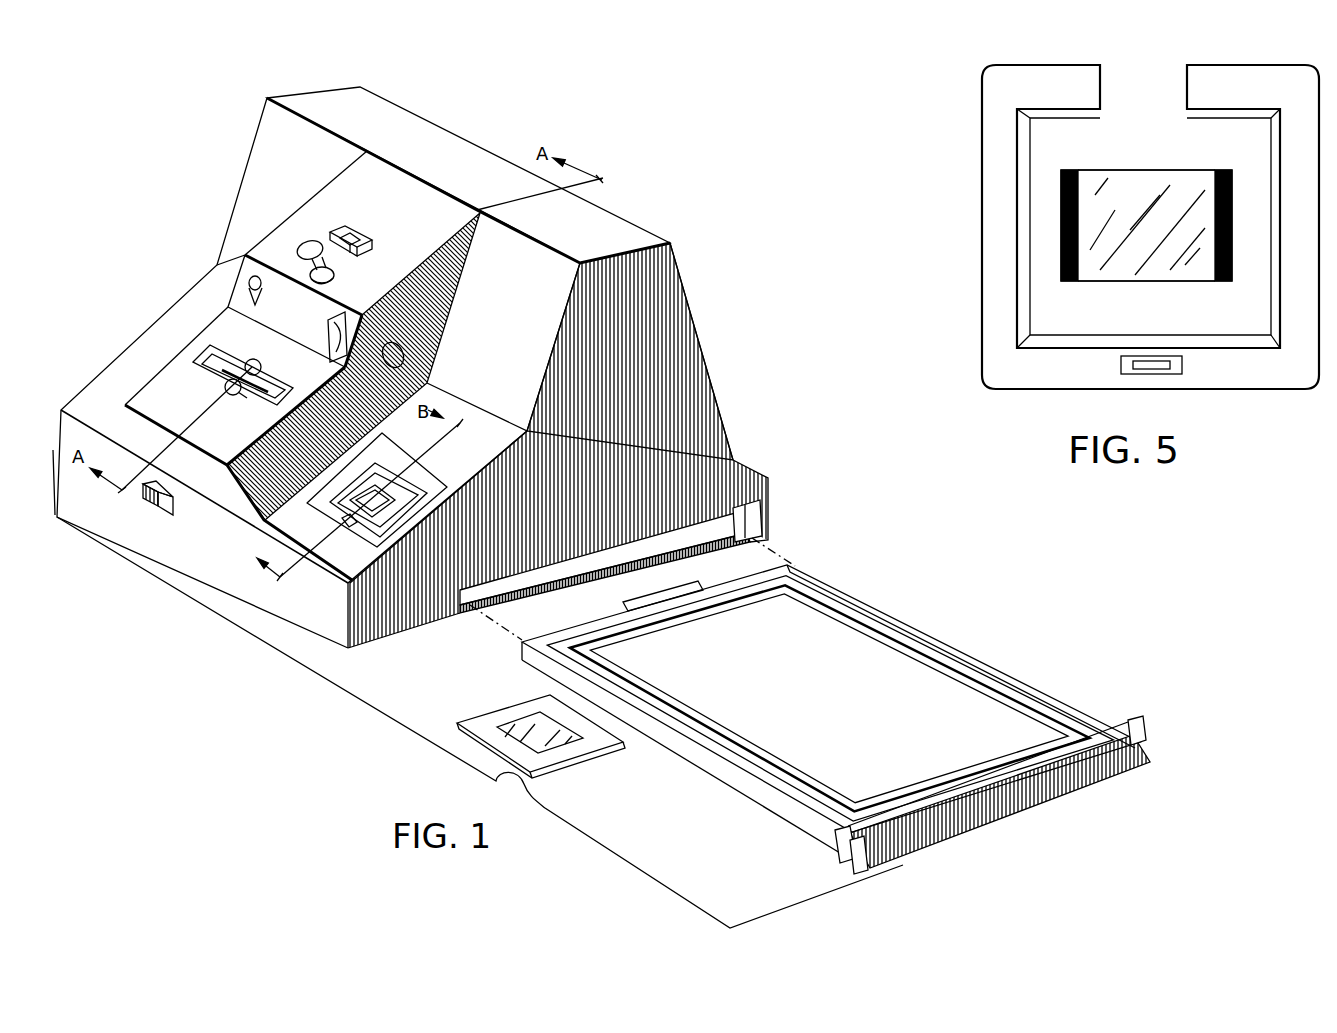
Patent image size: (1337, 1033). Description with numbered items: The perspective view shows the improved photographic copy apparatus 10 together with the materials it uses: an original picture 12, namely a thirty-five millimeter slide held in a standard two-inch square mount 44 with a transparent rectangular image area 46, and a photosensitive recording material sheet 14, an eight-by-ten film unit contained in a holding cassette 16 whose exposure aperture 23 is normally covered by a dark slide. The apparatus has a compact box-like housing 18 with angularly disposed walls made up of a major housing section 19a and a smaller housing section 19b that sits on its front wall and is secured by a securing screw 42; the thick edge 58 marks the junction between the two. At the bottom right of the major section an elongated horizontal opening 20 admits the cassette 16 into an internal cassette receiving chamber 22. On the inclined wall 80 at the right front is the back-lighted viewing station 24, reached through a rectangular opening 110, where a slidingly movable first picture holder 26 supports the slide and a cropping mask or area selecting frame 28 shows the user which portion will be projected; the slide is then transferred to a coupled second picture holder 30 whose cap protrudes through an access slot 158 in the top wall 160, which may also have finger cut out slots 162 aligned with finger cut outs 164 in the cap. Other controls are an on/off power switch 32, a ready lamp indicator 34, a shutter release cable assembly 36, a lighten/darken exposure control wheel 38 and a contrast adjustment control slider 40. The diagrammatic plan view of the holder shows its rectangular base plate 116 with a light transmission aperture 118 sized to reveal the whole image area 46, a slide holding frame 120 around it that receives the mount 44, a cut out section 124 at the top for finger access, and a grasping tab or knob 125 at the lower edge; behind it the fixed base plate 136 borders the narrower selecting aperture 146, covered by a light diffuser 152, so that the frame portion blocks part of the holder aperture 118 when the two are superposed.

In FIG. 1, the photographic copy apparatus 10 is at (640, 163).
In FIG. 1, the original picture 12 is at (589, 778).
In FIG. 1, the photosensitive recording material sheet 14 is at (894, 707).
In FIG. 1, the holding cassette 16 is at (1065, 678).
In FIG. 1, the housing 18 is at (730, 226).
In FIG. 1, the major housing section 19a is at (612, 262).
In FIG. 1, the smaller housing section 19b is at (418, 197).
In FIG. 1, the elongated horizontal opening 20 is at (463, 607).
In FIG. 1, the cassette receiving chamber 22 is at (622, 560).
In FIG. 1, the exposure aperture 23 is at (880, 637).
In FIG. 1, the viewing station 24 is at (447, 460).
In FIG. 1, the first picture holder 26 is at (393, 460).
In FIG. 5, the first picture holder 26 is at (994, 52).
In FIG. 1, the cropping mask or area selecting frame 28 is at (373, 502).
In FIG. 1, the second picture holder 30 is at (243, 359).
In FIG. 1, the on/off power switch 32 is at (170, 513).
In FIG. 1, the ready lamp indicator 34 is at (245, 281).
In FIG. 1, the shutter release cable assembly 36 is at (325, 262).
In FIG. 1, the lighten/darken exposure control wheel 38 is at (333, 353).
In FIG. 1, the contrast adjustment control slider 40 is at (347, 229).
In FIG. 1, the securing screw 42 is at (398, 356).
In FIG. 1, the slide mount 44 is at (538, 705).
In FIG. 1, the transparent rectangular image area 46 is at (503, 723).
In FIG. 1, the housing edge 58 is at (510, 257).
In FIG. 1, the inclined wall 80 is at (460, 410).
In FIG. 1, the opening 110 is at (380, 437).
In FIG. 5, the base plate 116 is at (1157, 152).
In FIG. 5, the light transmission aperture 118 is at (1126, 283).
In FIG. 5, the slide holding frame 120 is at (1002, 154).
In FIG. 5, the cut out section 124 is at (1141, 98).
In FIG. 1, the grasping tab or knob 125 is at (342, 518).
In FIG. 5, the grasping tab or knob 125 is at (1141, 372).
In FIG. 5, the base plate 136 is at (1061, 262).
In FIG. 5, the selecting aperture 146 is at (1215, 188).
In FIG. 5, the light diffuser 152 is at (1197, 267).
In FIG. 1, the access slot 158 is at (205, 358).
In FIG. 1, the top wall 160 is at (150, 400).
In FIG. 1, the finger cut out slots 162 is at (253, 360).
In FIG. 1, the finger cut outs 164 is at (243, 392).